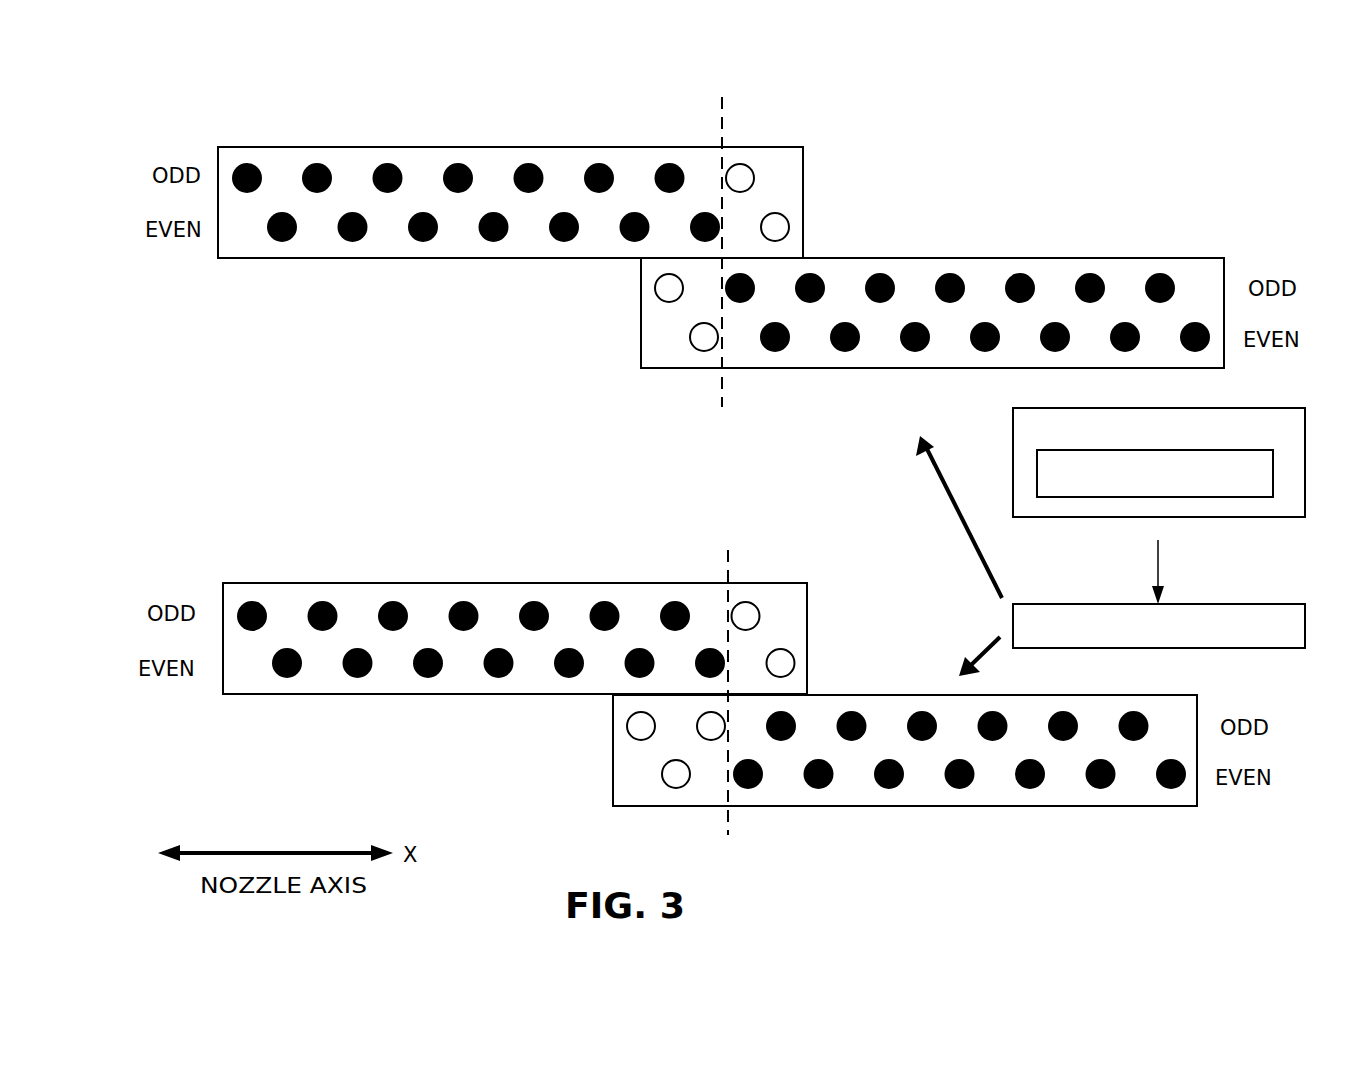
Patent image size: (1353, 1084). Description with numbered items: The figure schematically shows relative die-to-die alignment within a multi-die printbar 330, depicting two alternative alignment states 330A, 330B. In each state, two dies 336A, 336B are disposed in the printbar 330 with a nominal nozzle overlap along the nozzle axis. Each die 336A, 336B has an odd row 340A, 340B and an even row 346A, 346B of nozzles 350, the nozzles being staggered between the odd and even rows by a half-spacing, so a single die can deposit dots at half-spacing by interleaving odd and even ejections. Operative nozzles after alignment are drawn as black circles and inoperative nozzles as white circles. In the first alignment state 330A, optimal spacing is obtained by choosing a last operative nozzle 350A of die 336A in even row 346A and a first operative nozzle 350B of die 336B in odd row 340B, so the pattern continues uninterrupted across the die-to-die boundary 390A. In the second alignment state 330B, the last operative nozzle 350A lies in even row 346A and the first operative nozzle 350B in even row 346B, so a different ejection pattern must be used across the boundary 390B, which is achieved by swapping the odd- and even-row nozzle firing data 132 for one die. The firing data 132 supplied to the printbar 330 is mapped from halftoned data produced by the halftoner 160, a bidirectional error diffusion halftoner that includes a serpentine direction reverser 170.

The first alignment state 330A is at (195, 339).
The second alignment state 330B is at (195, 527).
The die 336A is at (437, 258).
The die 336B is at (1108, 258).
The nozzles 350 is at (387, 163).
The last operative nozzle 350A is at (705, 212).
The first operative nozzle 350B is at (745, 301).
The odd row 340A is at (812, 192).
The even row 346A is at (812, 240).
The odd row 340B is at (627, 275).
The even row 346B is at (817, 677).
The die-to-die boundary 390A is at (720, 386).
The die-to-die boundary 390B is at (732, 560).
The halftoner 160 is at (1159, 462).
The serpentine direction reverser 170 is at (1155, 473).
The printbar 330 is at (1110, 556).
The nozzle firing data 132 is at (1165, 580).